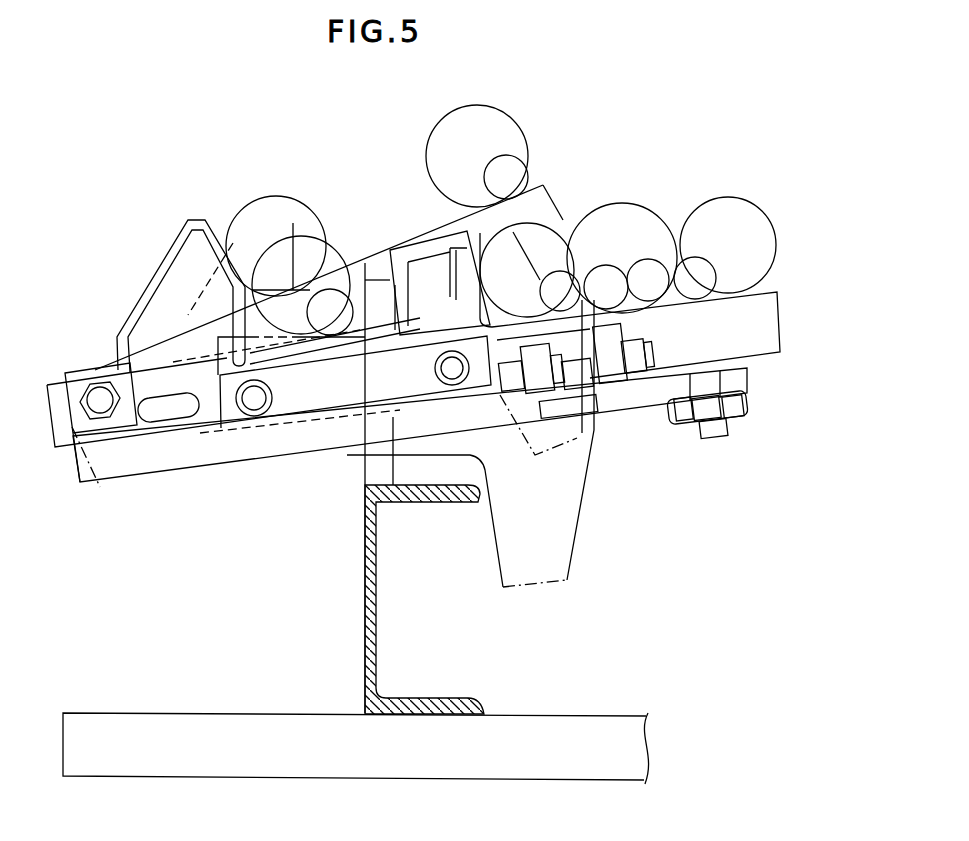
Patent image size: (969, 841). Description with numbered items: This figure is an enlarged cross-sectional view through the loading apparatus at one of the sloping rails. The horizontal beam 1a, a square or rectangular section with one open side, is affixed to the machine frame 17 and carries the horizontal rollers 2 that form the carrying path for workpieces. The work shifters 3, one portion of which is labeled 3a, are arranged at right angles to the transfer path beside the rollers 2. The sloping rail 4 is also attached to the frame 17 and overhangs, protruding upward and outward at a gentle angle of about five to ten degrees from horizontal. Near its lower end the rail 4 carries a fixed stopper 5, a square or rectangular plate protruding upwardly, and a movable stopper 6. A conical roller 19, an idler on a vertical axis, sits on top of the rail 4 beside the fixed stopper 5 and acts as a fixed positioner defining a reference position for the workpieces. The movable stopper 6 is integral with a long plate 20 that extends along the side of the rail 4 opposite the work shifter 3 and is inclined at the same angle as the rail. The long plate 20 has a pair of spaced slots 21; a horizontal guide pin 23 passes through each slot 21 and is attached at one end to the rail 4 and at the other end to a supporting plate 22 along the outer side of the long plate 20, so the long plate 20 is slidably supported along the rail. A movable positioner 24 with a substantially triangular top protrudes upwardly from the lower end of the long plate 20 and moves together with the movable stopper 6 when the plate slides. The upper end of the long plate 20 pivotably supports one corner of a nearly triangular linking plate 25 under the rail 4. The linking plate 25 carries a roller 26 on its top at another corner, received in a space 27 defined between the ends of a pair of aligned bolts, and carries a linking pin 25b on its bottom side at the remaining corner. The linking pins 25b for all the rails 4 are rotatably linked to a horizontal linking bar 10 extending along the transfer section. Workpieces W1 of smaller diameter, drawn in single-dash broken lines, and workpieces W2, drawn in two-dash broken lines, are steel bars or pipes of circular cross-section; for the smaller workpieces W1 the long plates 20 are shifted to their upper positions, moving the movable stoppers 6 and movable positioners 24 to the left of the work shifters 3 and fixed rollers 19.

The horizontal beam 1a is at (364, 598).
The horizontal rollers 2 is at (340, 410).
The work shifter 3 is at (585, 225).
The gauge plate corner 3a is at (564, 212).
The sloping rail 4 is at (778, 292).
The fixed stopper 5 is at (430, 280).
The movable stopper 6 is at (395, 280).
The horizontal linking bar 10 is at (748, 408).
The machine frame 17 is at (162, 708).
The conical roller 19 is at (362, 290).
The long plate 20 is at (493, 410).
The slots 21 is at (183, 412).
The supporting plate 22 is at (347, 405).
The horizontal guide pin 23 is at (254, 416).
The movable positioner 24 is at (180, 290).
The linking plate 25 is at (647, 398).
The linking pin 25b is at (713, 438).
The roller 26 is at (582, 390).
The space 27 is at (555, 285).
The workpieces W1 is at (703, 257).
The workpieces W2 is at (698, 150).